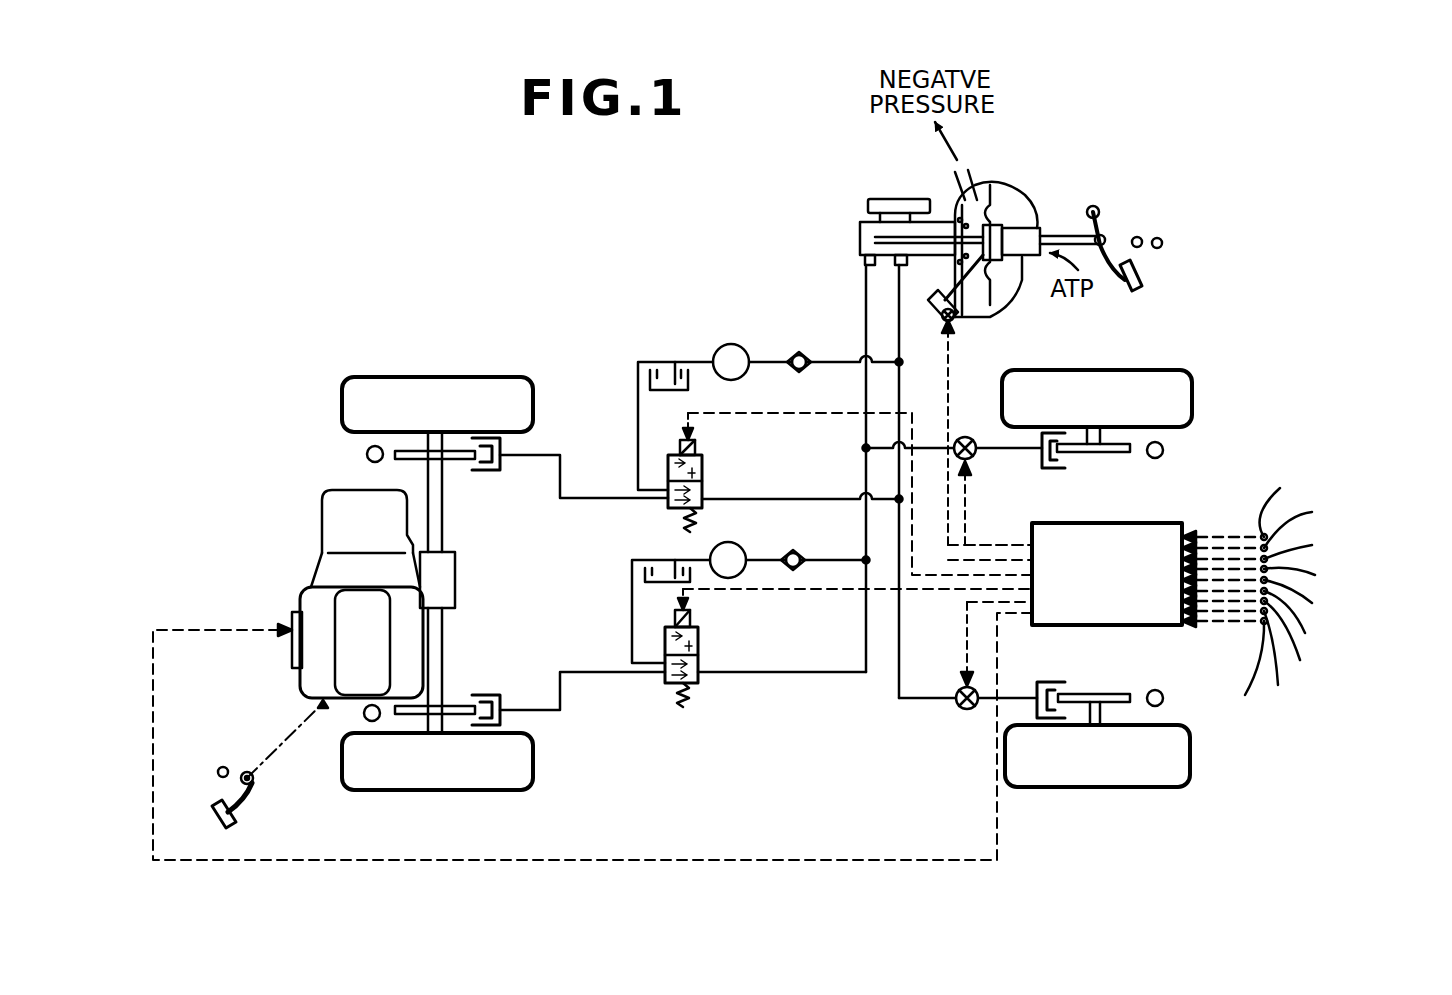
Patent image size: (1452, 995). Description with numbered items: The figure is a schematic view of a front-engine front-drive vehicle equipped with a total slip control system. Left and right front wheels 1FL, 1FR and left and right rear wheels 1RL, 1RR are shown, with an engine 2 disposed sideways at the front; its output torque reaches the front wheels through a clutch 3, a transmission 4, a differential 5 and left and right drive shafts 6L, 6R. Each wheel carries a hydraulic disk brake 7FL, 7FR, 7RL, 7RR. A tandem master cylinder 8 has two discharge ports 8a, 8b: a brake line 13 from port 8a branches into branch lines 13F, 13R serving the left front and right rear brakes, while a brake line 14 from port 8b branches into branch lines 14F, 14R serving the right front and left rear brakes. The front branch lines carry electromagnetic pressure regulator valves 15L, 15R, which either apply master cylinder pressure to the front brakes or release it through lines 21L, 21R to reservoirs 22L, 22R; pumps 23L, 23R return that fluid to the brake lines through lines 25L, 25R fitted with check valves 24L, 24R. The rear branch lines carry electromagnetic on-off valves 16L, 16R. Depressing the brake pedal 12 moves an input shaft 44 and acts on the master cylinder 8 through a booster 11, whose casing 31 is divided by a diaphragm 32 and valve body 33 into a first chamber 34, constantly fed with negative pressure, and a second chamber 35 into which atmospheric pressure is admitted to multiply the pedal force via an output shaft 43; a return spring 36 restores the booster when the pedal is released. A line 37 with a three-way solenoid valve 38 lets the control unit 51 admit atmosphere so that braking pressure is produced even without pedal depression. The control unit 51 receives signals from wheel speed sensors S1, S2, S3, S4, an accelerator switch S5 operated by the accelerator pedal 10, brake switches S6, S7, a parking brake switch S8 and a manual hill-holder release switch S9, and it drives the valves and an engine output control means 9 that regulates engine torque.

The right front wheel 1FR is at (432, 377).
The left front wheel 1FL is at (452, 790).
The right rear wheel 1RR is at (1192, 392).
The left rear wheel 1RL is at (1175, 787).
The engine 2 is at (326, 684).
The clutch 3 is at (326, 580).
The transmission 4 is at (343, 508).
The differential 5 is at (448, 592).
The right drive shaft 6R is at (443, 520).
The left drive shaft 6L is at (443, 660).
The right front wheel brake 7FR is at (512, 470).
The left front wheel brake 7FL is at (510, 722).
The right rear wheel brake 7RR is at (1088, 460).
The left rear wheel brake 7RL is at (1096, 680).
The master cylinder 8 is at (860, 233).
The discharge port 8a is at (865, 262).
The discharge port 8b is at (905, 265).
The engine output control means 9 is at (292, 642).
The accelerator pedal 10 is at (252, 800).
The booster 11 is at (987, 178).
The brake pedal 12 is at (1142, 284).
The brake line 13 is at (866, 300).
The branch brake line 13F is at (808, 672).
The branch brake line 13R is at (1030, 455).
The brake line 14 is at (899, 400).
The branch brake line 14F is at (778, 499).
The branch brake line 14R is at (920, 698).
The electromagnetic pressure regulator valve 15R is at (714, 468).
The electromagnetic pressure regulator valve 15L is at (706, 656).
The electromagnetic on-off valve 16R is at (977, 458).
The electromagnetic on-off valve 16L is at (960, 690).
The line 21R is at (638, 400).
The line 21L is at (632, 600).
The reservoir 22R is at (689, 384).
The reservoir 22L is at (690, 580).
The pump 23R is at (730, 344).
The pump 23L is at (732, 542).
The check valve 24R is at (799, 354).
The check valve 24L is at (793, 552).
The line 25R is at (838, 365).
The line 25L is at (840, 565).
The casing 31 is at (1020, 240).
The diaphragm 32 is at (1035, 305).
The valve body 33 is at (1050, 232).
The first chamber 34 is at (933, 161).
The second chamber 35 is at (1002, 222).
The return spring 36 is at (952, 206).
The line 37 is at (975, 312).
The three-way solenoid valve 38 is at (945, 325).
The output shaft 43 is at (868, 228).
The input shaft 44 is at (1102, 236).
The control unit 51 is at (1082, 625).
The wheel speed sensor S1 is at (364, 716).
The wheel speed sensor S2 is at (367, 454).
The wheel speed sensor S3 is at (1163, 696).
The wheel speed sensor S4 is at (1163, 450).
The accelerator switch S5 is at (223, 767).
The brake switch S6 is at (1142, 240).
The brake switch S7 is at (1163, 245).
The parking brake switch S8 is at (1243, 655).
The manual switch S9 is at (1224, 671).